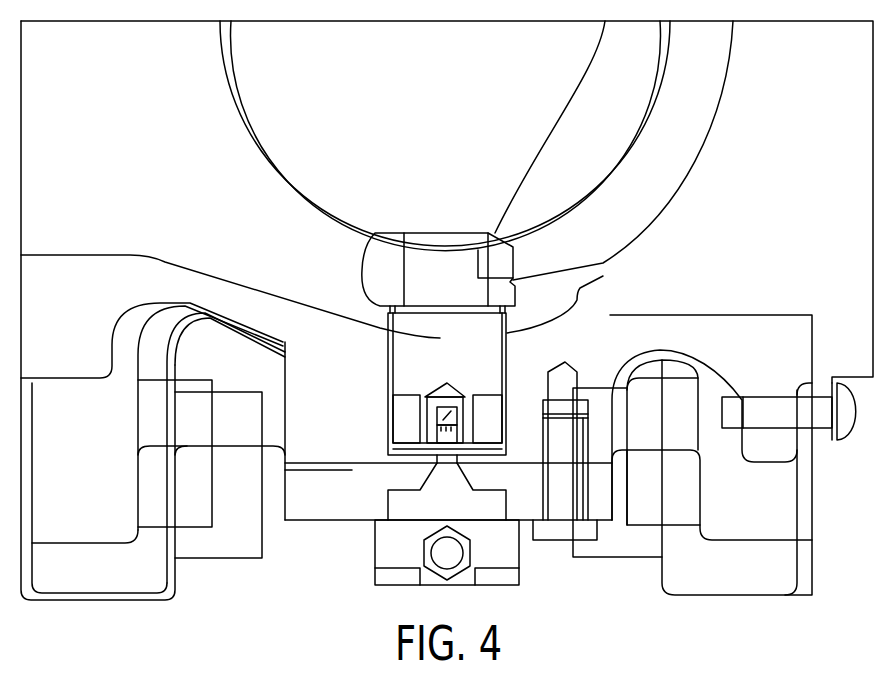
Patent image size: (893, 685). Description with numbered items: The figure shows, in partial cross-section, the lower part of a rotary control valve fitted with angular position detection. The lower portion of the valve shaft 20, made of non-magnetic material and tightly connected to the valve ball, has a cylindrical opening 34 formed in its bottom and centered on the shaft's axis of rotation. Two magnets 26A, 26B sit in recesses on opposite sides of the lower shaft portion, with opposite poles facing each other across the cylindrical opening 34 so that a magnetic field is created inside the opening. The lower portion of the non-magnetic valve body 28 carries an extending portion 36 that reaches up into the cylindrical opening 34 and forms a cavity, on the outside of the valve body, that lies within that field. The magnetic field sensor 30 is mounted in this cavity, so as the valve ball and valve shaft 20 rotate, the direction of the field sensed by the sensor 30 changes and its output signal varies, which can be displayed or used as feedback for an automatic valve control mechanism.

The valve shaft 20 is at (506, 353).
The magnet 26A is at (404, 418).
The magnet 26B is at (492, 410).
The valve body 28 is at (340, 517).
The magnetic field sensor 30 is at (455, 422).
The cylindrical opening 34 is at (463, 396).
The extending portion 36 is at (428, 432).